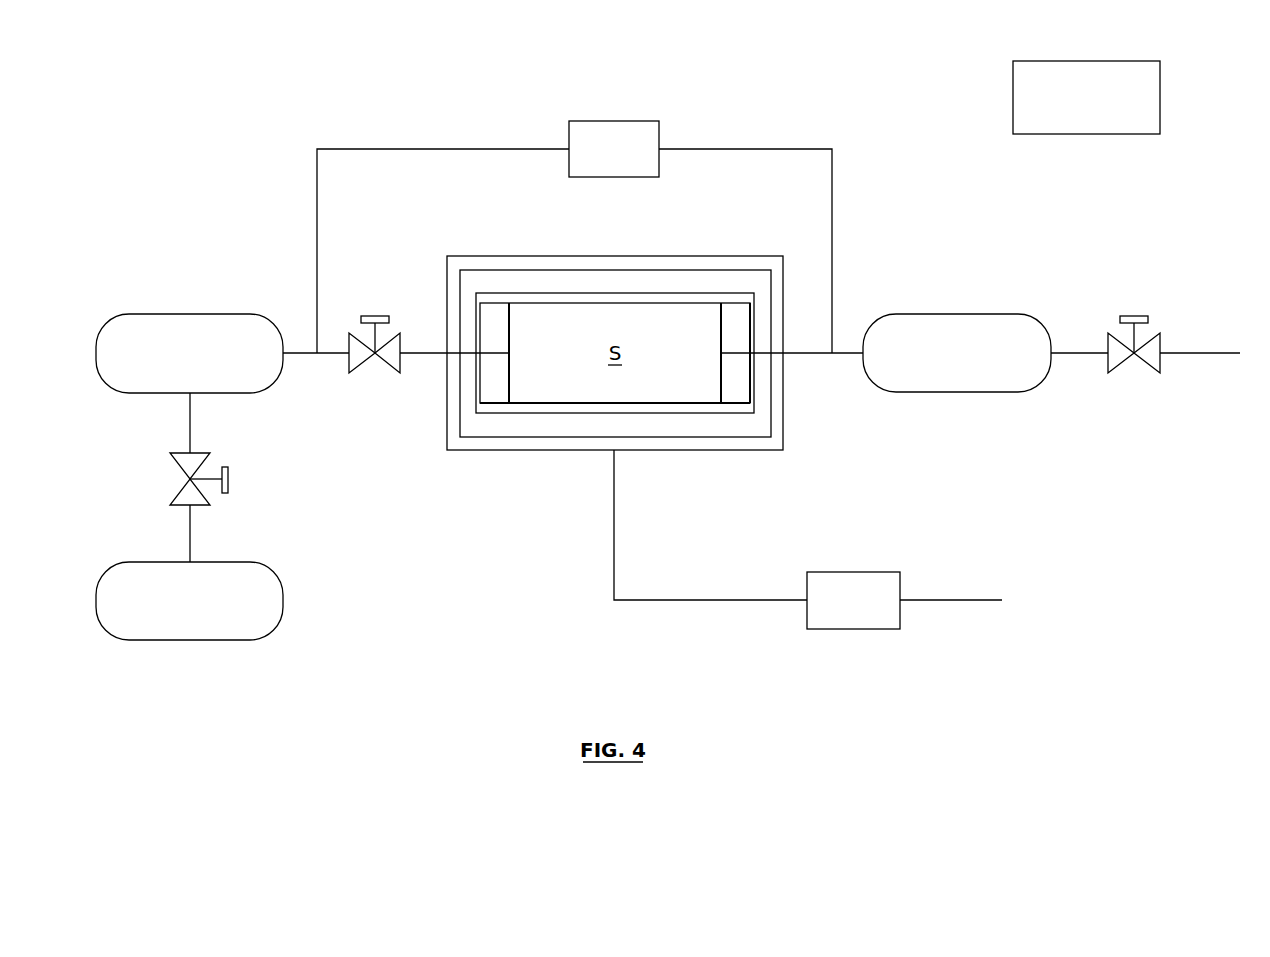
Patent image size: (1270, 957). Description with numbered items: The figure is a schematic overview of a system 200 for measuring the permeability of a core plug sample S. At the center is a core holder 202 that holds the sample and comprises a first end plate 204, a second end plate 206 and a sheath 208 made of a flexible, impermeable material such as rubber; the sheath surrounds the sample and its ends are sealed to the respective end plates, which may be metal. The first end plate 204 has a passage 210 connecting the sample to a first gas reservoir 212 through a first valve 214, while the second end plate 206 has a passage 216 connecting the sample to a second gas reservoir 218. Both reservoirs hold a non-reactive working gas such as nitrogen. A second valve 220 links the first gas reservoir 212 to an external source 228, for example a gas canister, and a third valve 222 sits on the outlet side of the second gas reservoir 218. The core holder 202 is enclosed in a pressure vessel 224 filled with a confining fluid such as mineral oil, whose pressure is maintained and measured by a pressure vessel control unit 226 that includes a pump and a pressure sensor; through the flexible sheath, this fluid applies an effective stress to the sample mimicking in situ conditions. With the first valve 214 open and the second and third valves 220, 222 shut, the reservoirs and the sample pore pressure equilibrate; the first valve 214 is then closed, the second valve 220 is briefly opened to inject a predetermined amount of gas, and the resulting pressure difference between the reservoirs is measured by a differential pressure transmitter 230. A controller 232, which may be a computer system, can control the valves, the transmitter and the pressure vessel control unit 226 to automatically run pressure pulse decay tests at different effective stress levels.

The system 200 is at (235, 117).
The core holder 202 is at (500, 283).
The first end plate 204 is at (477, 385).
The second end plate 206 is at (753, 387).
The sheath 208 is at (680, 412).
The passage 210 is at (497, 352).
The first gas reservoir 212 is at (170, 365).
The first valve 214 is at (374, 333).
The passage 216 is at (740, 355).
The second gas reservoir 218 is at (937, 365).
The second valve 220 is at (218, 477).
The third valve 222 is at (1174, 329).
The pressure vessel 224 is at (553, 450).
The pressure vessel control unit 226 is at (833, 612).
The external source 228 is at (170, 613).
The differential pressure transmitter 230 is at (594, 162).
The controller 232 is at (1066, 110).